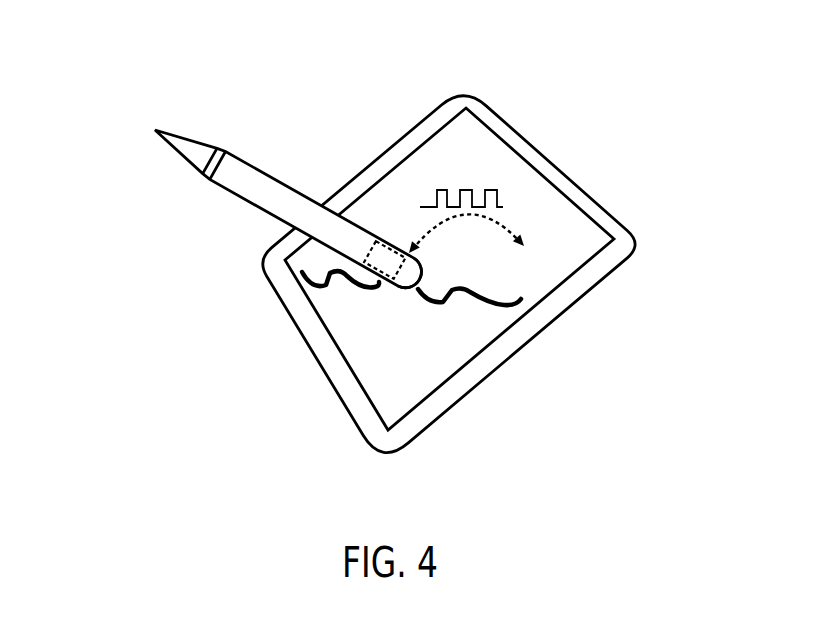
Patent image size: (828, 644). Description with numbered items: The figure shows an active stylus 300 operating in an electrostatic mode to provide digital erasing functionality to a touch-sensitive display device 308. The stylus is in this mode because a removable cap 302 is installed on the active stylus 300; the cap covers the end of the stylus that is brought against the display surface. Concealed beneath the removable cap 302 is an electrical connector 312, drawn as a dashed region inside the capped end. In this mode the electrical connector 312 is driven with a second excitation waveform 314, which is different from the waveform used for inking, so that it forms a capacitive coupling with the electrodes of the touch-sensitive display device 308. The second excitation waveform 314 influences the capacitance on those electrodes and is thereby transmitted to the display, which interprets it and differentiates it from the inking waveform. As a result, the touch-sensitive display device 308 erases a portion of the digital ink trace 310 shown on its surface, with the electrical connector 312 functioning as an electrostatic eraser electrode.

The active stylus 300 is at (268, 132).
The removable cap 302 is at (421, 265).
The touch-sensitive display device 308 is at (611, 204).
The digital ink trace 310 is at (438, 300).
The electrical connector 312 is at (392, 249).
The second excitation waveform 314 is at (443, 188).